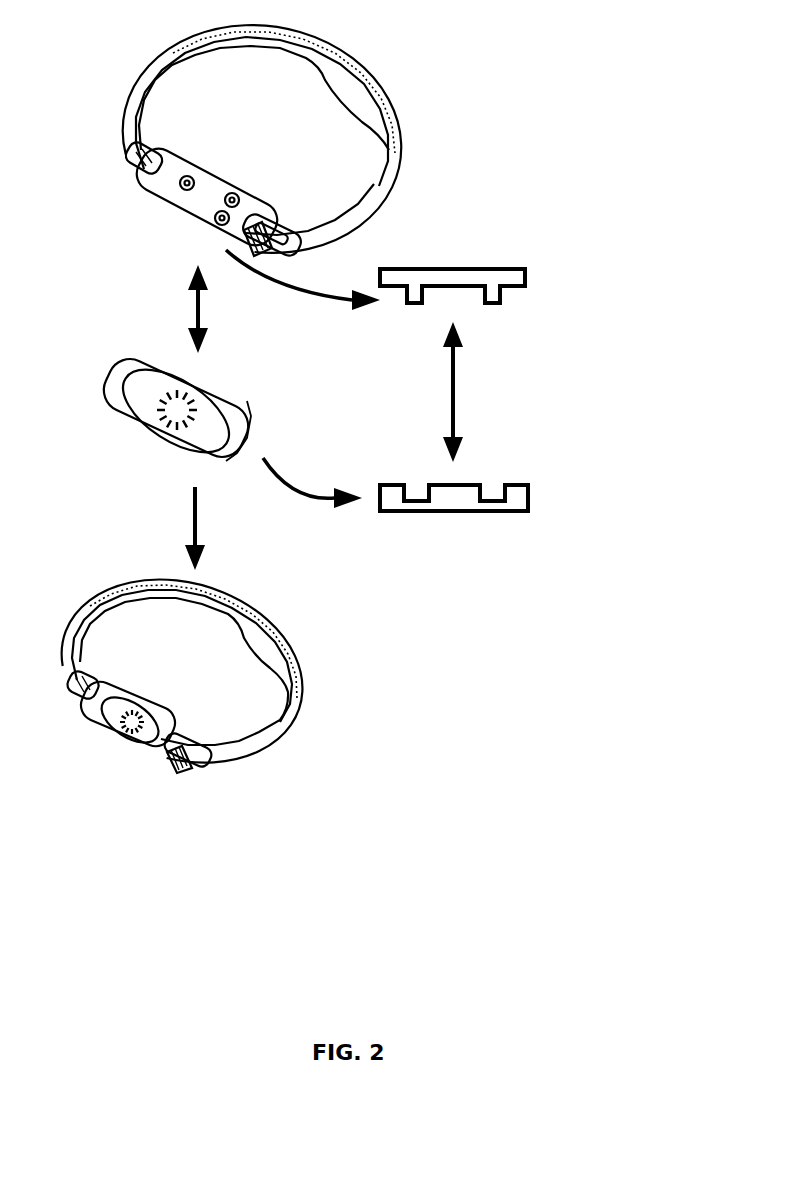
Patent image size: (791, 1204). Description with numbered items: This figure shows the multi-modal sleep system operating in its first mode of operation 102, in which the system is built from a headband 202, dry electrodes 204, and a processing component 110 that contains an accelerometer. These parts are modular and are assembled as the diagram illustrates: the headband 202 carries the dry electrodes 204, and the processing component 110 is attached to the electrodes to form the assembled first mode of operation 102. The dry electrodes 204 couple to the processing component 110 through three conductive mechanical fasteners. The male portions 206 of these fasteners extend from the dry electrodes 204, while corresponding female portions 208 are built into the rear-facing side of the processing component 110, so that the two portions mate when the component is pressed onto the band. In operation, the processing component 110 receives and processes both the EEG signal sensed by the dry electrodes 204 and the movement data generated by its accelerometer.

The headband 202 is at (399, 88).
The dry electrodes 204 is at (247, 182).
The processing component 110 is at (240, 407).
The male portions 206 is at (507, 303).
The female portions 208 is at (417, 487).
The first mode of operation 102 is at (295, 642).